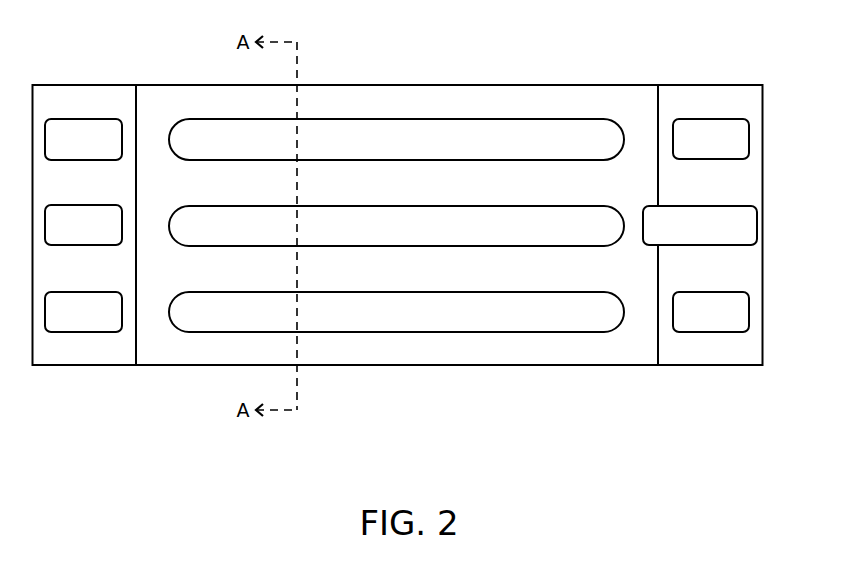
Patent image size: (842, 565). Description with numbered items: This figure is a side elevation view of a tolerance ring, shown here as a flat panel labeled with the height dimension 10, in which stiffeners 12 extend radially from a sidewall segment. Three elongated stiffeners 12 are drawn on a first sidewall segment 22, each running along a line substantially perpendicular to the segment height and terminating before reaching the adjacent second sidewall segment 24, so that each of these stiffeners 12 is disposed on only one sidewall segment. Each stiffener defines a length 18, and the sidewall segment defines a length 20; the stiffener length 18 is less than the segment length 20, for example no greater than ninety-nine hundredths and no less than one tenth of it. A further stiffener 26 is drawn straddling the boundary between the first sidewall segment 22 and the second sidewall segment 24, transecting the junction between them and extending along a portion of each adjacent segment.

The shelf divider body 10 is at (770, 365).
The stiffener 12 is at (373, 152).
The stiffener length 18 is at (623, 348).
The sidewall segment length 20 is at (658, 378).
The first sidewall segment 22 is at (562, 85).
The second sidewall segment 24 is at (705, 85).
The stiffener extending between adjacent sidewall segments 26 is at (677, 238).